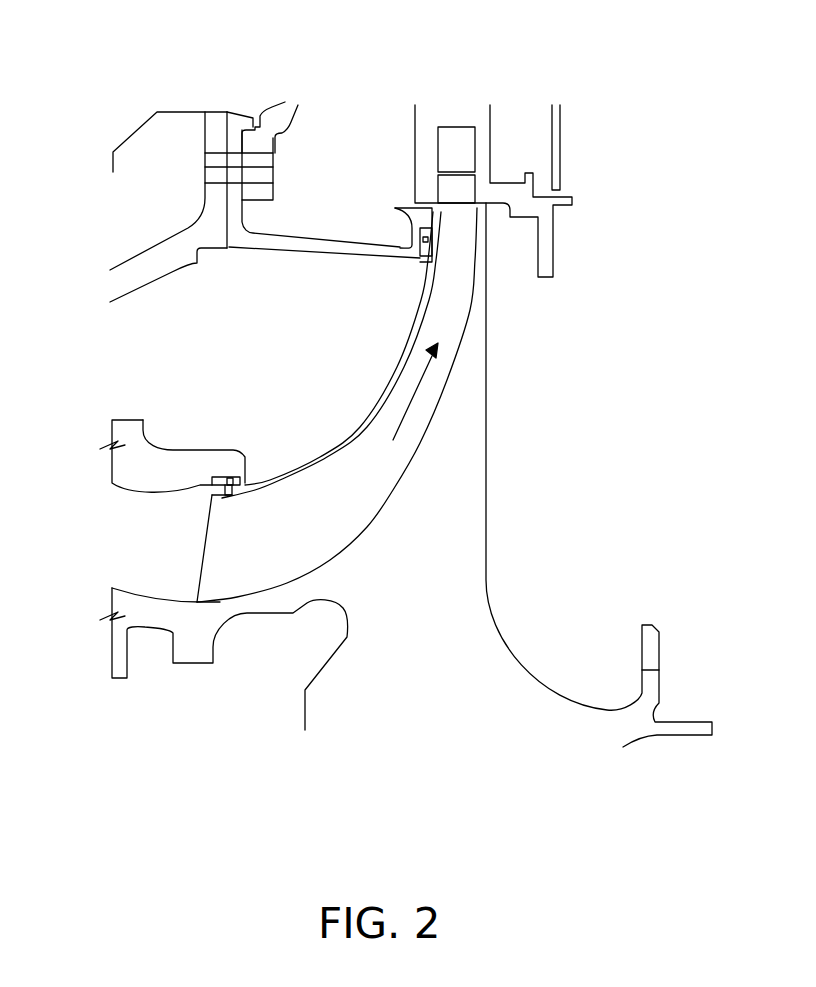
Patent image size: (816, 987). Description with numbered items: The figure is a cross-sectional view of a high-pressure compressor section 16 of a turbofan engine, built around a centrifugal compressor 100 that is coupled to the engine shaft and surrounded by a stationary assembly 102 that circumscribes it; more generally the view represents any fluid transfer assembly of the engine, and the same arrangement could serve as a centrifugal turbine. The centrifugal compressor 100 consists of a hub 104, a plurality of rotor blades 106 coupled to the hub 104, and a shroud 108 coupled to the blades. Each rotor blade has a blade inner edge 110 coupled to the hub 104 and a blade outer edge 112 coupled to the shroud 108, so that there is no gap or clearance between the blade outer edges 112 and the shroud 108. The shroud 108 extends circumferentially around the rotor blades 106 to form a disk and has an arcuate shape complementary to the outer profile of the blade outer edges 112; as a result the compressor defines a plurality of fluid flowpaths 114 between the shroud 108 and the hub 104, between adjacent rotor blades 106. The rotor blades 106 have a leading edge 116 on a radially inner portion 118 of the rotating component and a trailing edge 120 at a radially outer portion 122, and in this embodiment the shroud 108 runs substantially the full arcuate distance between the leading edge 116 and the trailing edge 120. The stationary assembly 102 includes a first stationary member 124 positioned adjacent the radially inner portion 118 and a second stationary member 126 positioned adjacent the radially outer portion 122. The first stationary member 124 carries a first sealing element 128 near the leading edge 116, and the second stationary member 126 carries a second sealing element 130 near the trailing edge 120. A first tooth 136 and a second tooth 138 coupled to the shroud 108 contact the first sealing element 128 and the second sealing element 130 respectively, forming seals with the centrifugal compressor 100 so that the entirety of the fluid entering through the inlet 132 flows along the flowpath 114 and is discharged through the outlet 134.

The high-pressure compressor section 16 is at (356, 112).
The centrifugal compressor 100 is at (456, 675).
The stationary assembly 102 is at (212, 88).
The hub 104 is at (437, 616).
The rotor blades 106 is at (315, 528).
The shroud 108 is at (408, 350).
The blade inner edge 110 is at (377, 523).
The blade outer edge 112 is at (340, 457).
The fluid flowpath 114 is at (420, 393).
The leading edge 116 is at (200, 573).
The radially inner portion 118 is at (262, 480).
The trailing edge 120 is at (458, 210).
The radially outer portion 122 is at (392, 203).
The first stationary member 124 is at (177, 465).
The second stationary member 126 is at (275, 243).
The first sealing element 128 is at (222, 476).
The second sealing element 130 is at (420, 252).
The inlet 132 is at (190, 513).
The outlet 134 is at (450, 178).
The first tooth 136 is at (230, 500).
The second tooth 138 is at (430, 242).